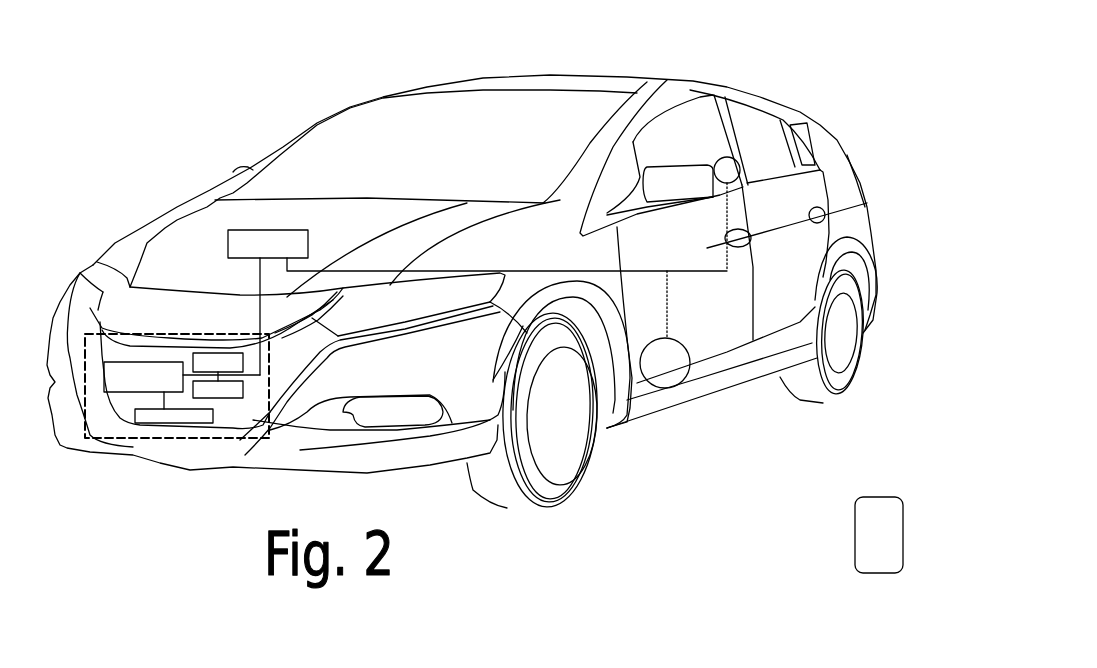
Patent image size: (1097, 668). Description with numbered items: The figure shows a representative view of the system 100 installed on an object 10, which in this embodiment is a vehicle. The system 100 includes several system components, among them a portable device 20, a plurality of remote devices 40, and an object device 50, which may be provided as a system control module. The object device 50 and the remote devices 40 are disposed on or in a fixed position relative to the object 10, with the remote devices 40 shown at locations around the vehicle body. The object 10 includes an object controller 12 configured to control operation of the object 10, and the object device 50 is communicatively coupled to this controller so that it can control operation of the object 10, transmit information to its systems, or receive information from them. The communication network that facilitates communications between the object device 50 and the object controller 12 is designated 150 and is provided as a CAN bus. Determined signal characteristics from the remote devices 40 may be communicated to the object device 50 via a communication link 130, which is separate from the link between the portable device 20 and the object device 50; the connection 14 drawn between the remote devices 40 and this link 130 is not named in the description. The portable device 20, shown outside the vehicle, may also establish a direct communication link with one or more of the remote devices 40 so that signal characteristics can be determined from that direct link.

The object 10 is at (427, 87).
The object controller 12 is at (102, 440).
The communication link 14 is at (722, 310).
The portable device 20 is at (877, 497).
The remote device 40 is at (715, 160).
The object device 50 is at (275, 230).
The system 100 is at (854, 92).
The communication link 130 is at (530, 271).
The communication network 150 is at (258, 279).